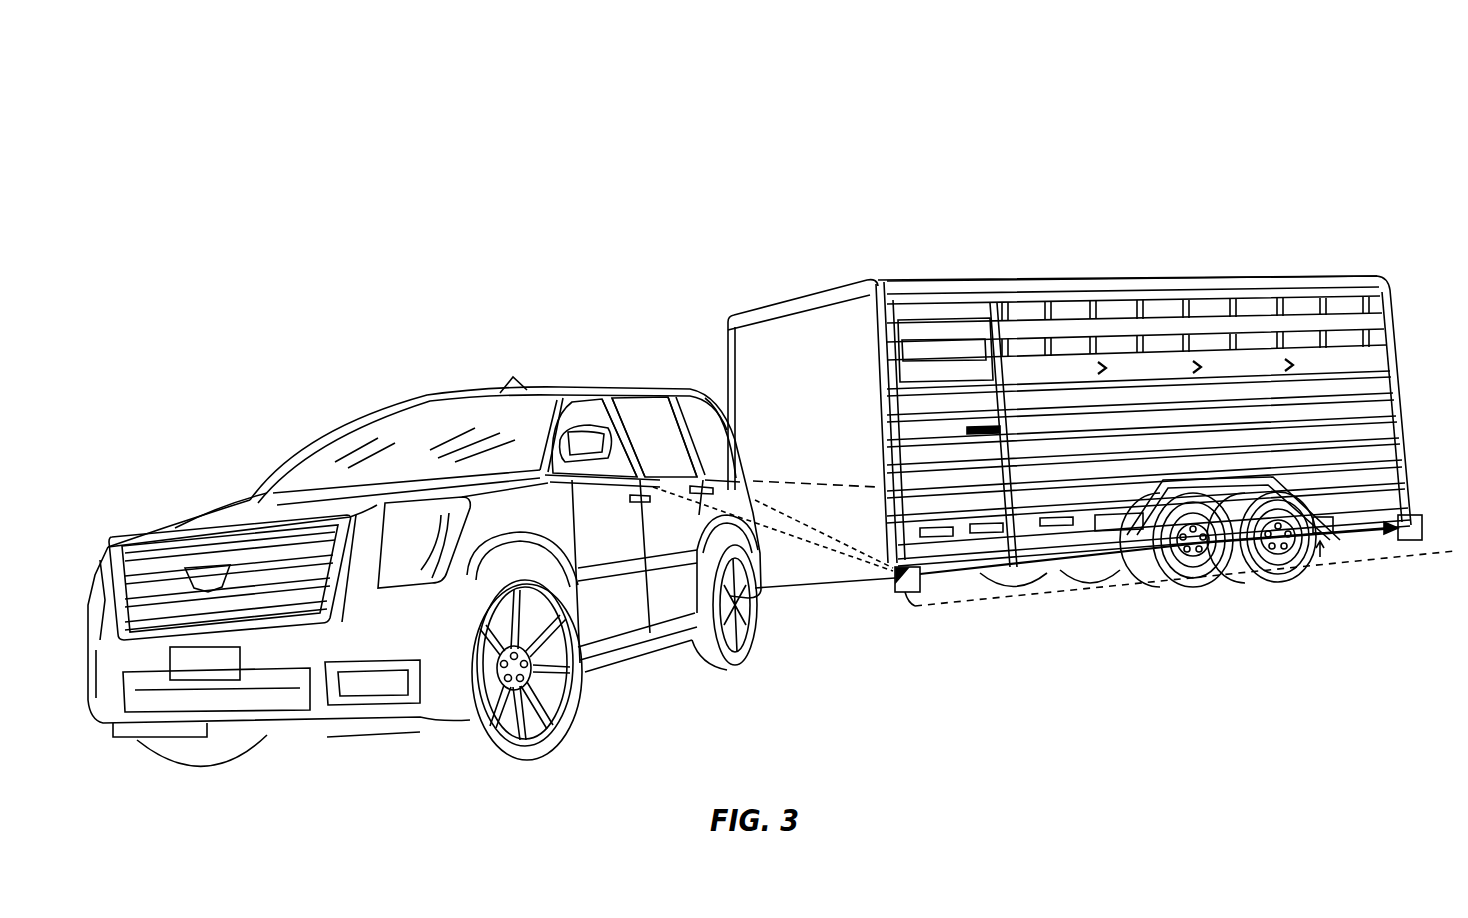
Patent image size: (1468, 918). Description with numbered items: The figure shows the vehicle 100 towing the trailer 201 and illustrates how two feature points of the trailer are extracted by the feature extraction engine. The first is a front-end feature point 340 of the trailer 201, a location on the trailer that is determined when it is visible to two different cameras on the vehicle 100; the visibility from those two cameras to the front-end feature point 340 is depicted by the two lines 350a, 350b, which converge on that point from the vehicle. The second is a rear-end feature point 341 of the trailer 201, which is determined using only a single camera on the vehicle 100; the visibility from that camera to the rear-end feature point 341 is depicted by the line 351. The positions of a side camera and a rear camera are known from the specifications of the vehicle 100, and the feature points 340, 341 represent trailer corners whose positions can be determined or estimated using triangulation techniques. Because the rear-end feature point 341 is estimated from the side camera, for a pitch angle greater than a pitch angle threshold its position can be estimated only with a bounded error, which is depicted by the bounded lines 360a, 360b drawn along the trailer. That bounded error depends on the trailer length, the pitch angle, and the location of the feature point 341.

The vehicle 100 is at (428, 400).
The trailer 201 is at (996, 285).
The front-end feature point 340 is at (905, 593).
The rear-end feature point 341 is at (1418, 543).
The line 350a is at (767, 506).
The line 350b is at (818, 552).
The line 351 is at (862, 486).
The bounded line 360a is at (1012, 602).
The bounded line 360b is at (1265, 485).